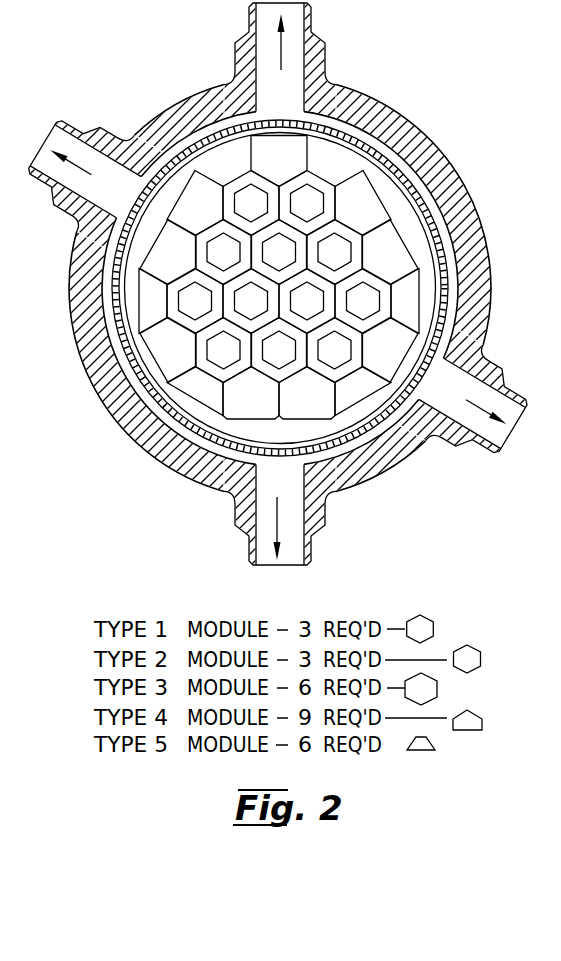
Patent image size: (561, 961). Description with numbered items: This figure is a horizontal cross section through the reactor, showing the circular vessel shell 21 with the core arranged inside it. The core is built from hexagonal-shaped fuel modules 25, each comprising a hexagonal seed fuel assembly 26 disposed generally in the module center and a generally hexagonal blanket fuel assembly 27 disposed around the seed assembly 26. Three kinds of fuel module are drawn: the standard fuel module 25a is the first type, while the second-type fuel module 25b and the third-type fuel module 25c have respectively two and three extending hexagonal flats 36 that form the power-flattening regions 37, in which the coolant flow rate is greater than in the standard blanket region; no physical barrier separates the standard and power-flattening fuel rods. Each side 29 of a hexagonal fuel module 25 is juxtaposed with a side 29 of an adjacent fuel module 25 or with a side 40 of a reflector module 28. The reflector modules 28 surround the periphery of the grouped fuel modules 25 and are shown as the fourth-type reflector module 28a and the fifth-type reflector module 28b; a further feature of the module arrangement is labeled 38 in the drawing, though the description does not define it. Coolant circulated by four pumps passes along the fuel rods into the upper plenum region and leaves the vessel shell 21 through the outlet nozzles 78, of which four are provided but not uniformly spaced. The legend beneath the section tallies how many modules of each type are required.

The vessel shell 21 is at (84, 284).
The hexagonal fuel module 25 is at (250, 201).
The Type 1 fuel module 25a is at (277, 254).
The Type 2 fuel module 25b is at (337, 254).
The Type 3 fuel module 25c is at (366, 305).
The seed fuel assembly 26 is at (296, 215).
The blanket fuel assembly 27 is at (363, 203).
The reflector module 28 is at (399, 264).
The Type 4 reflector module 28a is at (255, 403).
The Type 5 reflector module 28b is at (352, 398).
The side 29 is at (231, 220).
The extending hexagonal flat 36 is at (392, 335).
The power-flattening region 37 is at (201, 370).
The module web 38 is at (258, 357).
The side of reflector module 40 is at (194, 233).
The outlet nozzle 78 is at (290, 99).